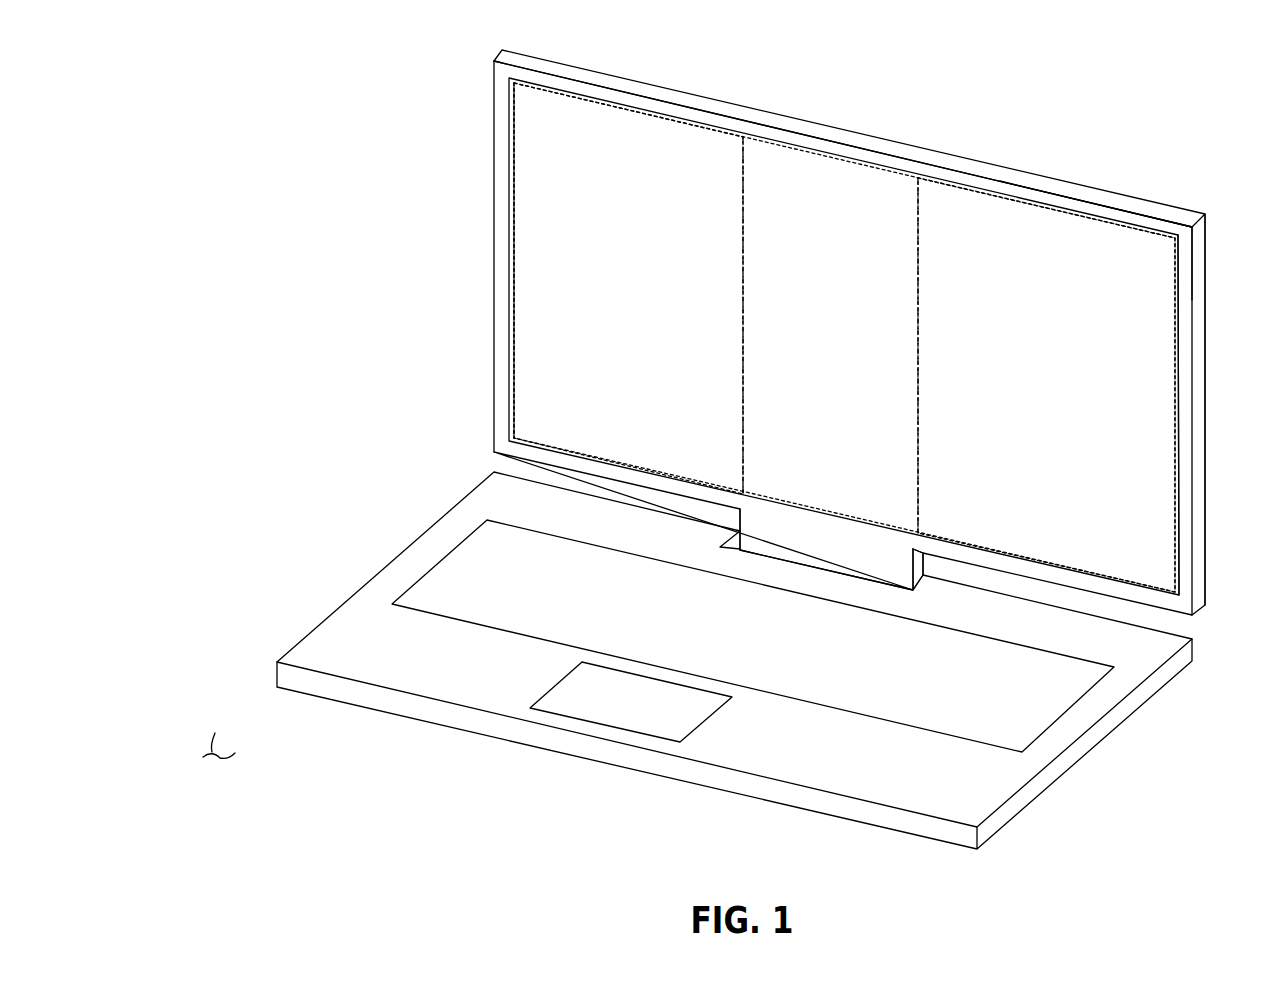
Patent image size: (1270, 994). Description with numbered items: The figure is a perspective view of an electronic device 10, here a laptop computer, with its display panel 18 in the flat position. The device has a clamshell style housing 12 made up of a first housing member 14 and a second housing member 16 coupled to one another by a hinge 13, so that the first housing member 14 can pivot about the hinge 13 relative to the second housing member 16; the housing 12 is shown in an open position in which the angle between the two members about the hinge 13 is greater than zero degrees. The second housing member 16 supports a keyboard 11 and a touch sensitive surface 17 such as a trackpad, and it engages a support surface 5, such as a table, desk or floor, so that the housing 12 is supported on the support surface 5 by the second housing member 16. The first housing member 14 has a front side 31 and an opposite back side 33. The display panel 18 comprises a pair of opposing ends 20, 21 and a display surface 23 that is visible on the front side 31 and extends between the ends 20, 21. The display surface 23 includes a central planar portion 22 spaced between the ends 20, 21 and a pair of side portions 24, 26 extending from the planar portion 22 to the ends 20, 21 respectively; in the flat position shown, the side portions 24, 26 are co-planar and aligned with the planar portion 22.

The support surface 5 is at (219, 731).
The electronic device 10 is at (397, 158).
The keyboard 11 is at (450, 552).
The housing 12 is at (482, 49).
The hinge 13 is at (945, 574).
The first housing member 14 is at (1200, 383).
The second housing member 16 is at (1160, 677).
The touch sensitive surface 17 is at (580, 720).
The display panel 18 is at (1132, 207).
The first end 20 is at (496, 230).
The second end 21 is at (1197, 313).
The central planar portion 22 is at (847, 172).
The display surface 23 is at (531, 392).
The first side portion 24 is at (533, 302).
The second side portion 26 is at (1152, 450).
The front side 31 is at (486, 127).
The back side 33 is at (706, 69).